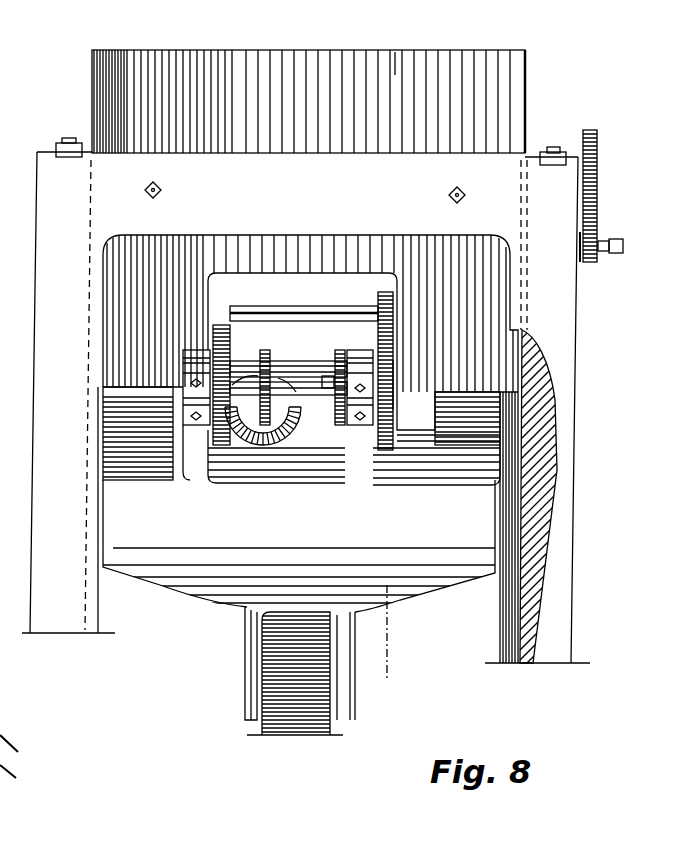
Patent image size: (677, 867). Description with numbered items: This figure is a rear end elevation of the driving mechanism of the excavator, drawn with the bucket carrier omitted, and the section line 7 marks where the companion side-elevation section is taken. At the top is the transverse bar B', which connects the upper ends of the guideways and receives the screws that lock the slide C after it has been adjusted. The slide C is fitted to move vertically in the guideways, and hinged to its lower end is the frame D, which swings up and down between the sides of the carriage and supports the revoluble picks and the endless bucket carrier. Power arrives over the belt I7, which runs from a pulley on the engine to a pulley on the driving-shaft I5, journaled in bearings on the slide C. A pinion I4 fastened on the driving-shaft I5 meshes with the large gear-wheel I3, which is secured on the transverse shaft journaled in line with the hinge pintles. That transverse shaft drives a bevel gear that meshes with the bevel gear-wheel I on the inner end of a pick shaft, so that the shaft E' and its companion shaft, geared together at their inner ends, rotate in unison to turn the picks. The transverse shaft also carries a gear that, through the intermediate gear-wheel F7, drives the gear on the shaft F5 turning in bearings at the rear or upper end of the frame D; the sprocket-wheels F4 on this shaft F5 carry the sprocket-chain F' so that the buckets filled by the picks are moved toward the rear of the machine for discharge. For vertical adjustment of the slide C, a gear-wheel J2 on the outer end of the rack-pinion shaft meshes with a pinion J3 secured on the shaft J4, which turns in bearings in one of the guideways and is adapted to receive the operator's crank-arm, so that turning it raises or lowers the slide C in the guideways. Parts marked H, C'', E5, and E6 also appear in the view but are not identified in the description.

The section line 7 is at (392, 366).
The slide C is at (308, 101).
The transverse bar B' is at (310, 318).
The bolt H is at (438, 205).
The bearing block C'' is at (299, 495).
The driving-shaft I5 is at (285, 305).
The pinion I4 is at (370, 295).
The large gear-wheel I3 is at (395, 372).
The intermediate gear-wheel F7 is at (230, 345).
The sprocket-wheels F4 is at (275, 360).
The shaft F5 is at (330, 425).
The bevel gear E5 is at (252, 402).
The bracket E6 is at (200, 450).
The belt I7 is at (318, 418).
The bevel gear-wheel I is at (296, 440).
The gear-wheel J2 is at (598, 156).
The pinion J3 is at (597, 226).
The shaft J4 is at (600, 255).
The frame D is at (30, 501).
The shaft E' is at (289, 671).
The sprocket-chain F' is at (343, 541).